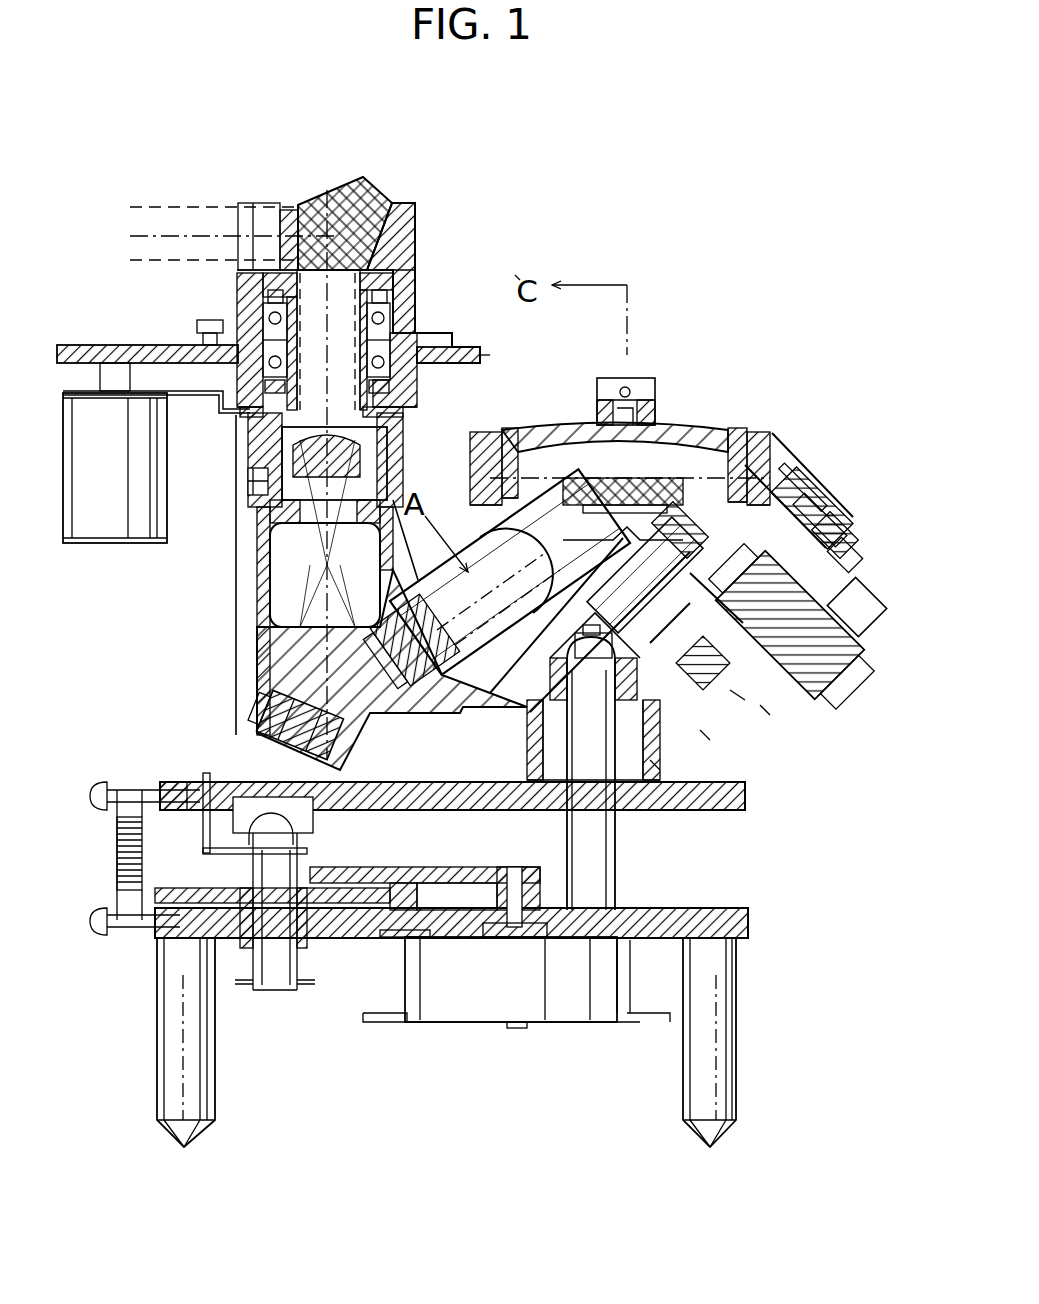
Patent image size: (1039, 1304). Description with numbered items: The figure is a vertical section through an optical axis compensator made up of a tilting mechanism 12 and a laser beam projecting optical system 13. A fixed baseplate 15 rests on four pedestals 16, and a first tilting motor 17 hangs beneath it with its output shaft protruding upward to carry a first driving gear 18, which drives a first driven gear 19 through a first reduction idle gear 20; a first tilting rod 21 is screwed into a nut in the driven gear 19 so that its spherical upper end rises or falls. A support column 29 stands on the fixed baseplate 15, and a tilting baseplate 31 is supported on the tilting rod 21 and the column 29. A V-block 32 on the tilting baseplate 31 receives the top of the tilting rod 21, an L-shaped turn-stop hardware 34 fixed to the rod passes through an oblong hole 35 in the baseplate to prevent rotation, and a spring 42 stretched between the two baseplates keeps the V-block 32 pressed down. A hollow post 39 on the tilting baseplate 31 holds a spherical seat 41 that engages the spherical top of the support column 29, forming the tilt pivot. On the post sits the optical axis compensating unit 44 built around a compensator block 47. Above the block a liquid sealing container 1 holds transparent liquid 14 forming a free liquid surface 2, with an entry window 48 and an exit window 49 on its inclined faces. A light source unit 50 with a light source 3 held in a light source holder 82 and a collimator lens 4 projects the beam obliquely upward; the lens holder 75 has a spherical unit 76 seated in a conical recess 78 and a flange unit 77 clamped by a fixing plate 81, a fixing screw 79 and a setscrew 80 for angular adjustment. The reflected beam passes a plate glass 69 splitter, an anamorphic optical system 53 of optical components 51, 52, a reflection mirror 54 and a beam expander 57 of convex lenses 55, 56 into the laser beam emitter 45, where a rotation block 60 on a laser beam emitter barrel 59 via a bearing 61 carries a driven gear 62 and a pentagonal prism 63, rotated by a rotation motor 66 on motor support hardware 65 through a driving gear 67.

The liquid sealing container 1 is at (540, 470).
The free liquid surface 2 is at (575, 460).
The light source 3 is at (830, 592).
The collimator lens 4 is at (830, 520).
The tilting mechanism 12 is at (755, 1057).
The laser beam projecting optical system 13 is at (515, 268).
The transparent liquid 14 is at (665, 470).
The fixed baseplate 15 is at (685, 908).
The pedestals 16 is at (740, 1095).
The first tilting motor 17 is at (470, 1000).
The first driving gear 18 is at (533, 867).
The first driven gear 19 is at (117, 870).
The first reduction idle gear 20 is at (436, 867).
The first tilting rod 21 is at (280, 990).
The support column 29 is at (620, 860).
The tilting baseplate 31 is at (408, 782).
The V-block 32 is at (313, 828).
The turn-stop hardware 34 is at (185, 782).
The oblong hole 35 is at (205, 780).
The hollow post 39 is at (660, 768).
The spherical seat 41 is at (650, 760).
The spring 42 is at (155, 895).
The optical axis compensating unit 44 is at (800, 487).
The laser beam emitter 45 is at (463, 345).
The compensator block 47 is at (790, 458).
The entry window 48 is at (700, 490).
The exit window 49 is at (530, 490).
The light source unit 50 is at (755, 705).
The optical component 51 is at (462, 700).
The optical component 52 is at (283, 685).
The anamorphic optical system 53 is at (430, 705).
The reflection mirror 54 is at (268, 710).
The convex lens 55 is at (270, 600).
The convex lens 56 is at (282, 500).
The beam expander 57 is at (236, 615).
The laser beam emitter barrel 59 is at (252, 470).
The rotation block 60 is at (238, 296).
The bearing 61 is at (423, 325).
The driven gear 62 is at (497, 345).
The pentagonal prism 63 is at (340, 178).
The motor support hardware 65 is at (196, 400).
The rotation motor 66 is at (120, 525).
The driving gear 67 is at (70, 345).
The plate glass 69 is at (470, 535).
The lens holder 75 is at (840, 575).
The spherical unit 76 is at (705, 690).
The flange unit 77 is at (815, 497).
The conical recess 78 is at (690, 490).
The fixing screw 79 is at (730, 695).
The setscrew 80 is at (850, 545).
The fixing plate 81 is at (700, 735).
The light source holder 82 is at (828, 660).